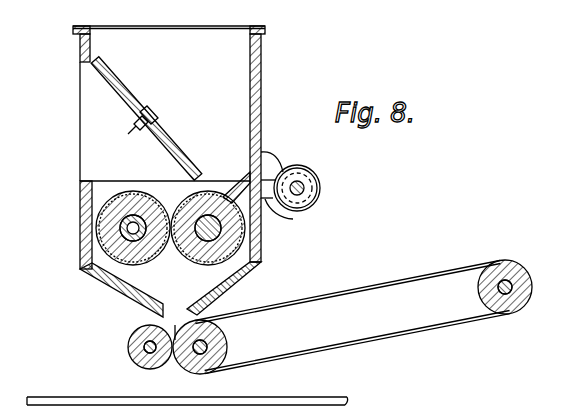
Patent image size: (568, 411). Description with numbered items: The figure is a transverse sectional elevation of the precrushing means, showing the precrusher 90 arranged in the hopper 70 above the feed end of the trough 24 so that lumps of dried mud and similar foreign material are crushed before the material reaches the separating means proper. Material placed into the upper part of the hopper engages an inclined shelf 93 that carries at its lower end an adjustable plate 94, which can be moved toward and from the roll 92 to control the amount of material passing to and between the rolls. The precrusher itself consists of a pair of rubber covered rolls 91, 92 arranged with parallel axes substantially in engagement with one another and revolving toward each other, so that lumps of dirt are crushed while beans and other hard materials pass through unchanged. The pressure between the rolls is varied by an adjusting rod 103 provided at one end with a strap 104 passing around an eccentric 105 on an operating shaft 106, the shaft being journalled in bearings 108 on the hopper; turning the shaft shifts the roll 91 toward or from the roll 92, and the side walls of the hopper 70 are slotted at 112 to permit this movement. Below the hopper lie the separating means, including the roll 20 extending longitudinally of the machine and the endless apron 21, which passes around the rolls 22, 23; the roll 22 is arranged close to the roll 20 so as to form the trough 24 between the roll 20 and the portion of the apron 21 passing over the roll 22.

The precrusher 90 is at (174, 170).
The hopper 70 is at (110, 277).
The inclined shelf 93 is at (120, 116).
The adjustable plate 94 is at (150, 142).
The rubber covered roll 91 is at (139, 192).
The slot 112 is at (120, 232).
The rubber covered roll 92 is at (236, 243).
The strap 104 is at (321, 192).
The eccentric 105 is at (318, 203).
The operating shaft 106 is at (303, 186).
The bearings 108 is at (280, 155).
The adjusting rod 103 is at (287, 219).
The roll 20 is at (132, 338).
The apron roll 22 is at (224, 339).
The trough 24 is at (173, 336).
The apron roll 23 is at (479, 292).
The endless apron 21 is at (351, 291).